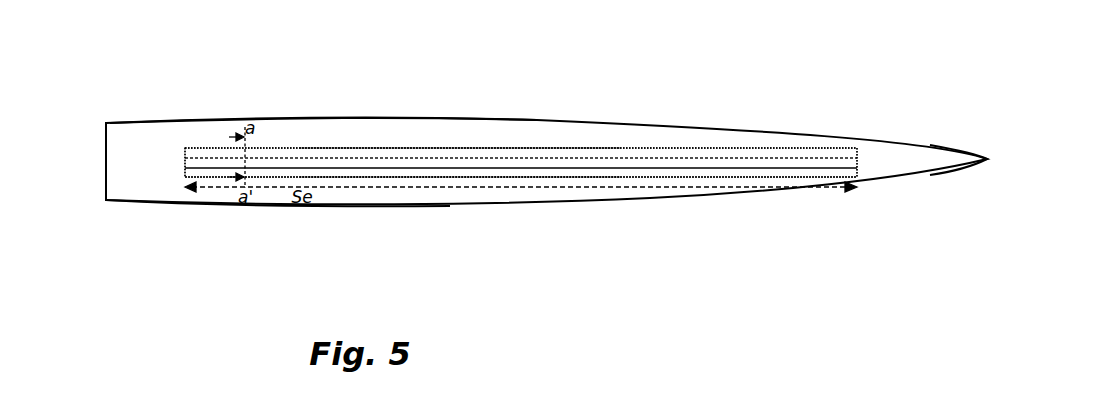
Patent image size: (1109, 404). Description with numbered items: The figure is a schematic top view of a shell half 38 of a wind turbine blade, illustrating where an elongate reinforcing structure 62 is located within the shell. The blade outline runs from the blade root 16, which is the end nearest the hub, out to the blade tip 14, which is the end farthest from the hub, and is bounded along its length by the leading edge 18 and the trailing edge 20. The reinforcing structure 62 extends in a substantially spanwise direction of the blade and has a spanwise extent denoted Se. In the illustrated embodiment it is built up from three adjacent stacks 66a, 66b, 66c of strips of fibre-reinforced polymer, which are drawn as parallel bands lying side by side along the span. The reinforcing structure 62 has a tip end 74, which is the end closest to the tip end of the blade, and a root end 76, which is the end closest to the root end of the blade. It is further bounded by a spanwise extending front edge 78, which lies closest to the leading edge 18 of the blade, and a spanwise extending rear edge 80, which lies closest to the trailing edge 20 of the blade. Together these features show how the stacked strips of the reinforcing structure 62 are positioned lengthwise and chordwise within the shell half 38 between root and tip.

The blade tip 14 is at (977, 157).
The blade root 16 is at (105, 153).
The leading edge 18 is at (253, 208).
The trailing edge 20 is at (537, 120).
The shell half 38 is at (266, 90).
The reinforcing structure 62 is at (723, 162).
The stack of strips 66a is at (598, 152).
The stack of strips 66b is at (668, 163).
The stack of strips 66c is at (688, 170).
The tip end 74 is at (857, 153).
The root end 76 is at (185, 163).
The front edge 78 is at (353, 178).
The rear edge 80 is at (458, 147).